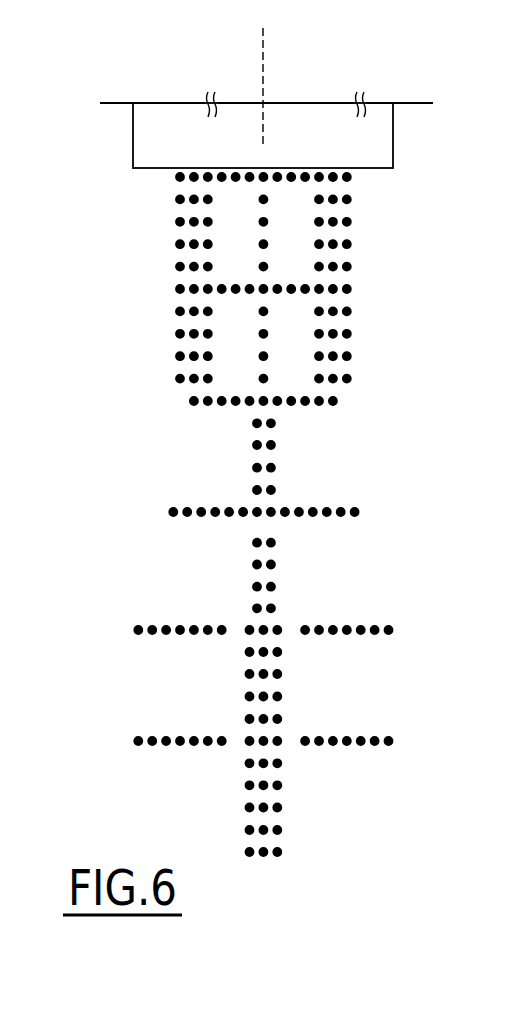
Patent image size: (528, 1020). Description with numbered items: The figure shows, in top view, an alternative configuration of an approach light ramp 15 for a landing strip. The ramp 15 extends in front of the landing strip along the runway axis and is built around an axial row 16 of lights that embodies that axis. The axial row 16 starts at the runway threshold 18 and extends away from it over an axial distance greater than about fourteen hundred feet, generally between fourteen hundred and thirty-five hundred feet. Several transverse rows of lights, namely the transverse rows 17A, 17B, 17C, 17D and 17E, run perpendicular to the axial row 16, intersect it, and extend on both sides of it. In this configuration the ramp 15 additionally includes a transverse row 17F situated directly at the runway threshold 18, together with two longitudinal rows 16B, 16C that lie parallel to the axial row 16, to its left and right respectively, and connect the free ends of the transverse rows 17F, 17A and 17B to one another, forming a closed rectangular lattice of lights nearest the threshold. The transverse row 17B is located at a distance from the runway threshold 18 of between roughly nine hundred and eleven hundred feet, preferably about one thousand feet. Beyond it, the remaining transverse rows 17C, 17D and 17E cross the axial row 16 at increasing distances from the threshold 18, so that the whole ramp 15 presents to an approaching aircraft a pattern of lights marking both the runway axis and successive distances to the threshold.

The approach light ramp 15 is at (462, 140).
The axial row 16 is at (251, 535).
The longitudinal row 16B is at (180, 357).
The longitudinal row 16C is at (347, 357).
The transverse row 17A is at (236, 289).
The transverse row 17B is at (193, 401).
The transverse row 17C is at (173, 512).
The transverse row 17D is at (137, 630).
The transverse row 17E is at (137, 741).
The transverse row 17F is at (198, 177).
The runway threshold 18 is at (320, 166).